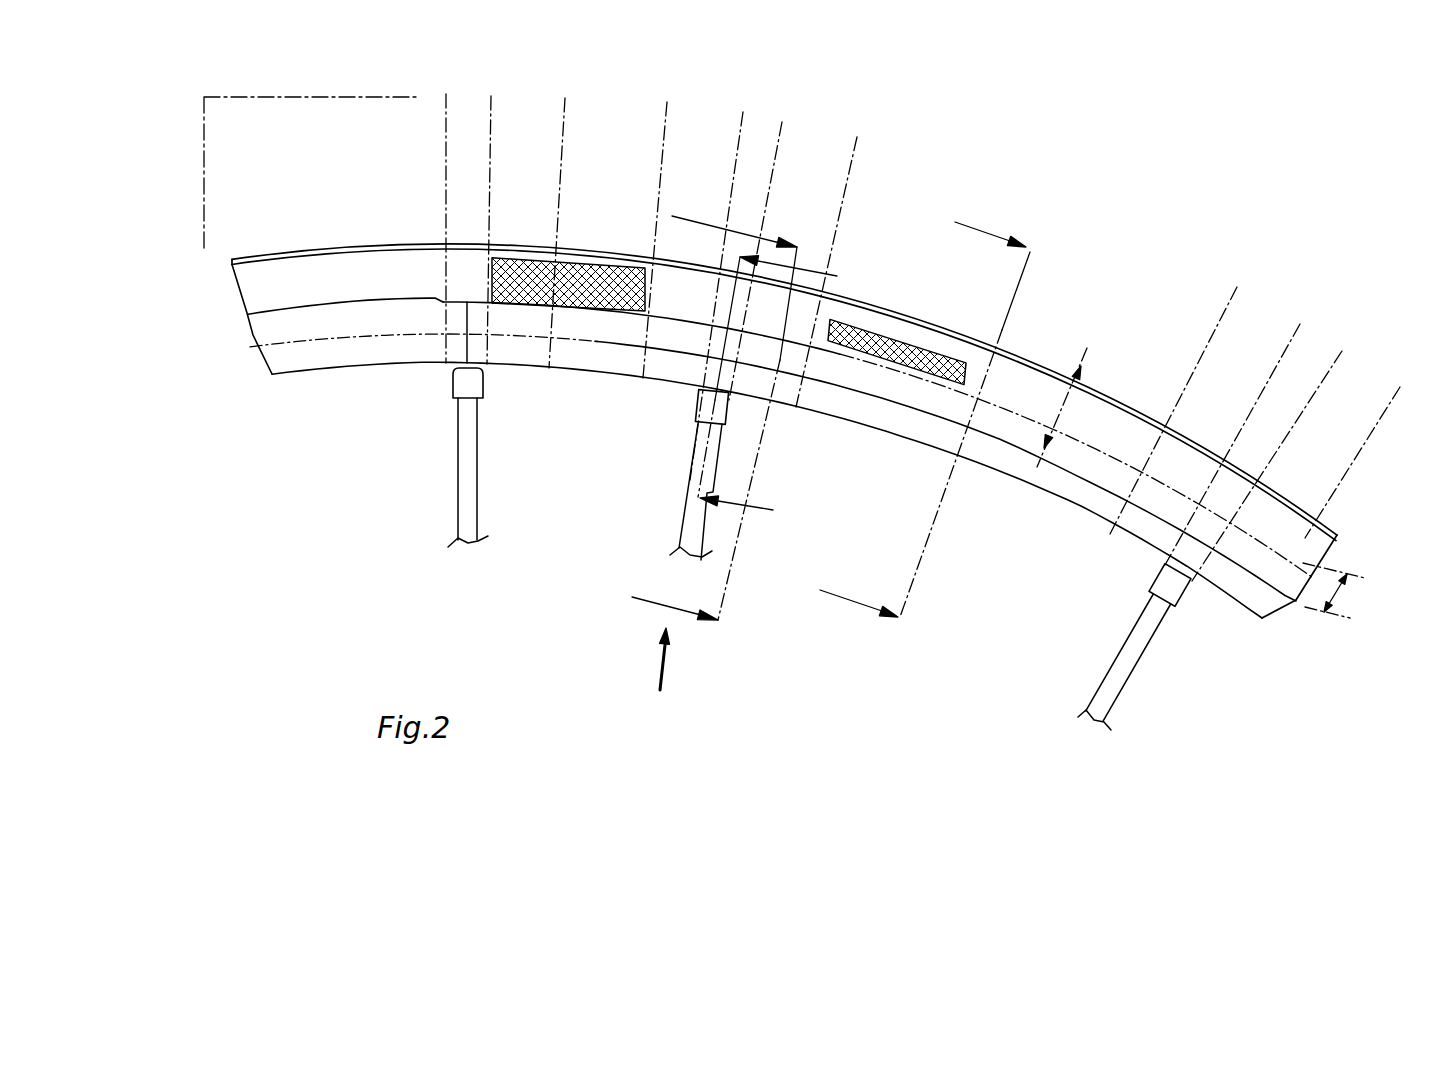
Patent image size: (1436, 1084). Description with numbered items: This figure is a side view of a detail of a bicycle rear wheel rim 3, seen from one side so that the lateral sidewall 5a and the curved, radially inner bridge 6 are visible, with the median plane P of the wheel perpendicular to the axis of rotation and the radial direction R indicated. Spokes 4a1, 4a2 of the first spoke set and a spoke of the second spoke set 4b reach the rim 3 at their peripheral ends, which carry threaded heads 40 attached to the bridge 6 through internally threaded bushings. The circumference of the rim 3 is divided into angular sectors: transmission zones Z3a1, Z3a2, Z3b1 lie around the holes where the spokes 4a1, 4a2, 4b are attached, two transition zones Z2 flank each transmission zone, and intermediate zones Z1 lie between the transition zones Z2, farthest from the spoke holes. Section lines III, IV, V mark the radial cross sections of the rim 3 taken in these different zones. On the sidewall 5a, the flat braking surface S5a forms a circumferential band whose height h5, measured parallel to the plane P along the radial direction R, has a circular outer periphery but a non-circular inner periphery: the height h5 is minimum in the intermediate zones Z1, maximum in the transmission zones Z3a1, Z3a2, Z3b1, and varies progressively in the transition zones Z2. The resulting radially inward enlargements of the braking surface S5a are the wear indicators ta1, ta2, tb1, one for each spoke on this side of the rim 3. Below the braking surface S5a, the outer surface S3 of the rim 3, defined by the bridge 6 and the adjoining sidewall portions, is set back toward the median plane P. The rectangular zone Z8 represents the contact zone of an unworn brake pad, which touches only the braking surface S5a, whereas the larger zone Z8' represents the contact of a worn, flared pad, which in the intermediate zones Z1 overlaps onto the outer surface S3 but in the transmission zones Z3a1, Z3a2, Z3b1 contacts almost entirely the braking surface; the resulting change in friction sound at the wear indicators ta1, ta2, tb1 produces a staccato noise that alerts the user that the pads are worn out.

The rim 3 is at (1325, 546).
The sidewall 5a is at (268, 341).
The bridge 6 is at (991, 474).
The threaded head 40 is at (460, 387).
The spoke 4a1 is at (1128, 672).
The spoke 4a2 is at (466, 491).
The spoke set 4b is at (688, 523).
The braking surface S5a is at (295, 278).
The outer surface S3 is at (1056, 489).
The contact zone Z8 is at (894, 394).
The contact zone Z8' is at (564, 333).
The wear indicator ta1 is at (1188, 503).
The wear indicator ta2 is at (435, 298).
The wear indicator tb1 is at (697, 320).
The height of the braking surface h5 is at (1062, 407).
The median plane P is at (311, 173).
The radial direction R is at (655, 659).
The section line IV is at (714, 409).
The section line V is at (767, 378).
The section line III is at (925, 411).
The intermediate zone Z1 is at (565, 97).
The transition zone Z2 is at (565, 97).
The transmission zone Z3a1 is at (1339, 351).
The transmission zone Z3a2 is at (491, 95).
The transmission zone Z3b1 is at (786, 122).